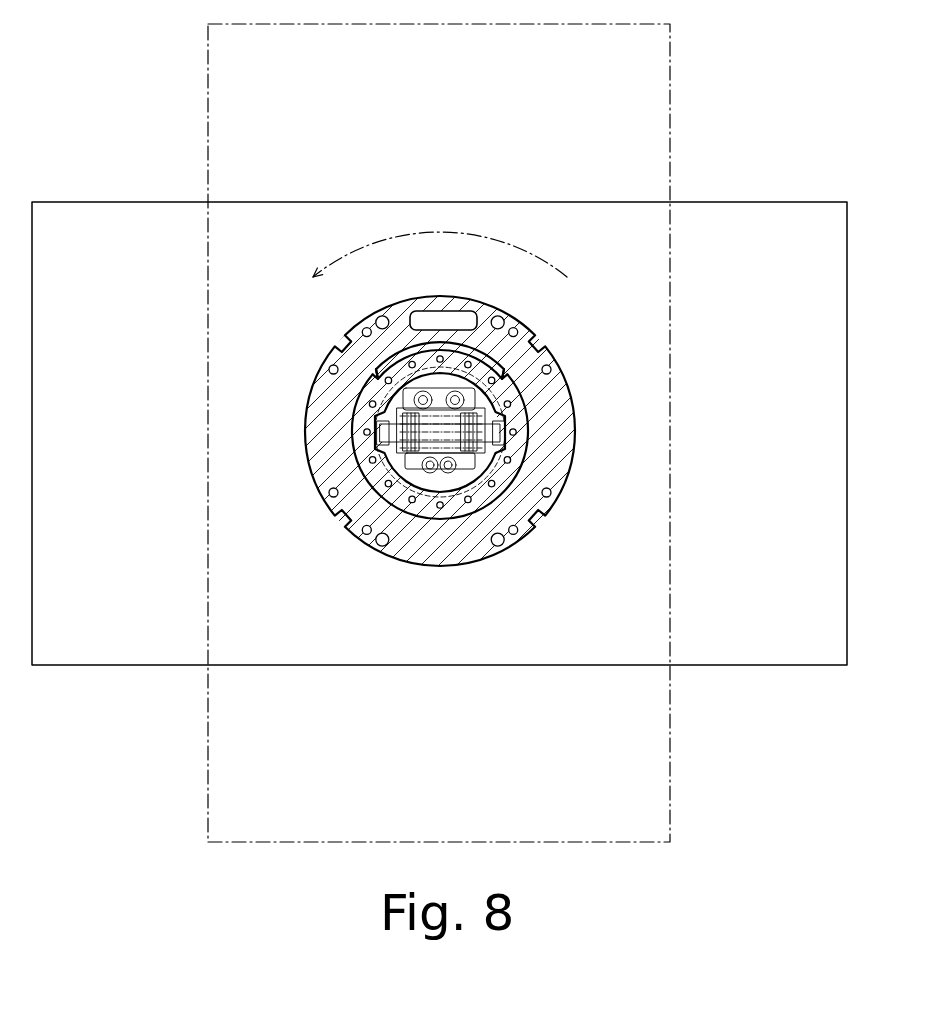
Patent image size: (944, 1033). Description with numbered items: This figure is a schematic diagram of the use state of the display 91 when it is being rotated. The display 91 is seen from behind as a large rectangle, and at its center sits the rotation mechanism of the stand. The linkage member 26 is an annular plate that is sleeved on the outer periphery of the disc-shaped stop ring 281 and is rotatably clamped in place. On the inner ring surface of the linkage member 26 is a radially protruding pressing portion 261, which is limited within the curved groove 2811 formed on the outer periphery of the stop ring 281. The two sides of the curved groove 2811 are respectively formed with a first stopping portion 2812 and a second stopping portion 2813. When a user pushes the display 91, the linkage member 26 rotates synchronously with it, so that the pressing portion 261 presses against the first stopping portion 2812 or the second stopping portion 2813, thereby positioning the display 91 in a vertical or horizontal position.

The linkage member 26 is at (557, 462).
The pressing portion 261 is at (498, 368).
The stop ring 281 is at (520, 415).
The curved groove 2811 is at (407, 352).
The first stopping portion 2812 is at (374, 376).
The second stopping portion 2813 is at (506, 380).
The display 91 is at (820, 425).